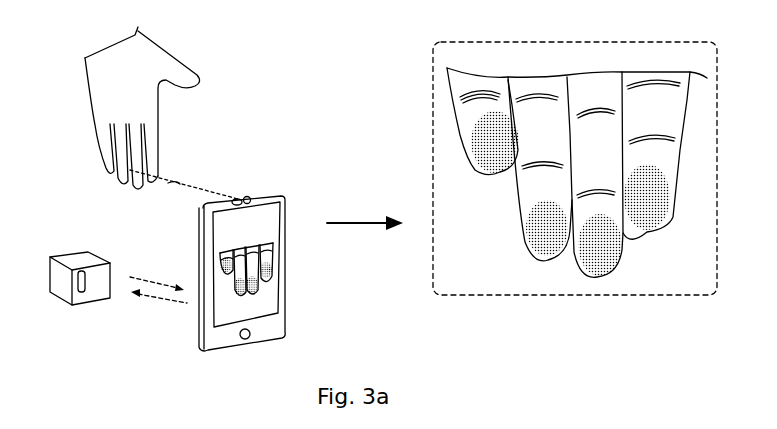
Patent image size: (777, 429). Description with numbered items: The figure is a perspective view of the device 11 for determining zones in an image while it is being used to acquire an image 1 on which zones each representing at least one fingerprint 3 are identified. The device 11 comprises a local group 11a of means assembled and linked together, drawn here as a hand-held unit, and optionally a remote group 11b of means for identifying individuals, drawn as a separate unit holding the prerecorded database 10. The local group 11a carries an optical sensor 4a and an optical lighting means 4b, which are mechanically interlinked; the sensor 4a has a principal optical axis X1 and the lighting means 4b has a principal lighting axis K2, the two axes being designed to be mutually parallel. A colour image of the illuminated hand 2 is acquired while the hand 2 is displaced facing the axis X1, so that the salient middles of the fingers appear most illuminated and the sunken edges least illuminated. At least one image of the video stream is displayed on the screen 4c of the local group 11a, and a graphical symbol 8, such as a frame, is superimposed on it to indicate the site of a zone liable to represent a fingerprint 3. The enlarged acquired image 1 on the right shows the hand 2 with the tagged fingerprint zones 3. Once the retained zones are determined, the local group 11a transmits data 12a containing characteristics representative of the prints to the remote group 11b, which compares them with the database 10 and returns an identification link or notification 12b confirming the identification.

The acquired colour image 1 is at (580, 42).
The hand 2 is at (102, 110).
The fingerprint 3 is at (548, 257).
The optical sensor 4a is at (238, 199).
The optical lighting means 4b is at (256, 184).
The screen 4c is at (273, 305).
The graphical symbol 8 is at (268, 285).
The prerecorded database 10 is at (82, 293).
The device for determining zones in an image 11 is at (90, 190).
The local group of means 11a is at (268, 345).
The remote group of means 11b is at (66, 254).
The data 12a is at (152, 298).
The notification 12b is at (153, 282).
The principal lighting axis K2 is at (174, 177).
The principal optical axis X1 is at (176, 182).